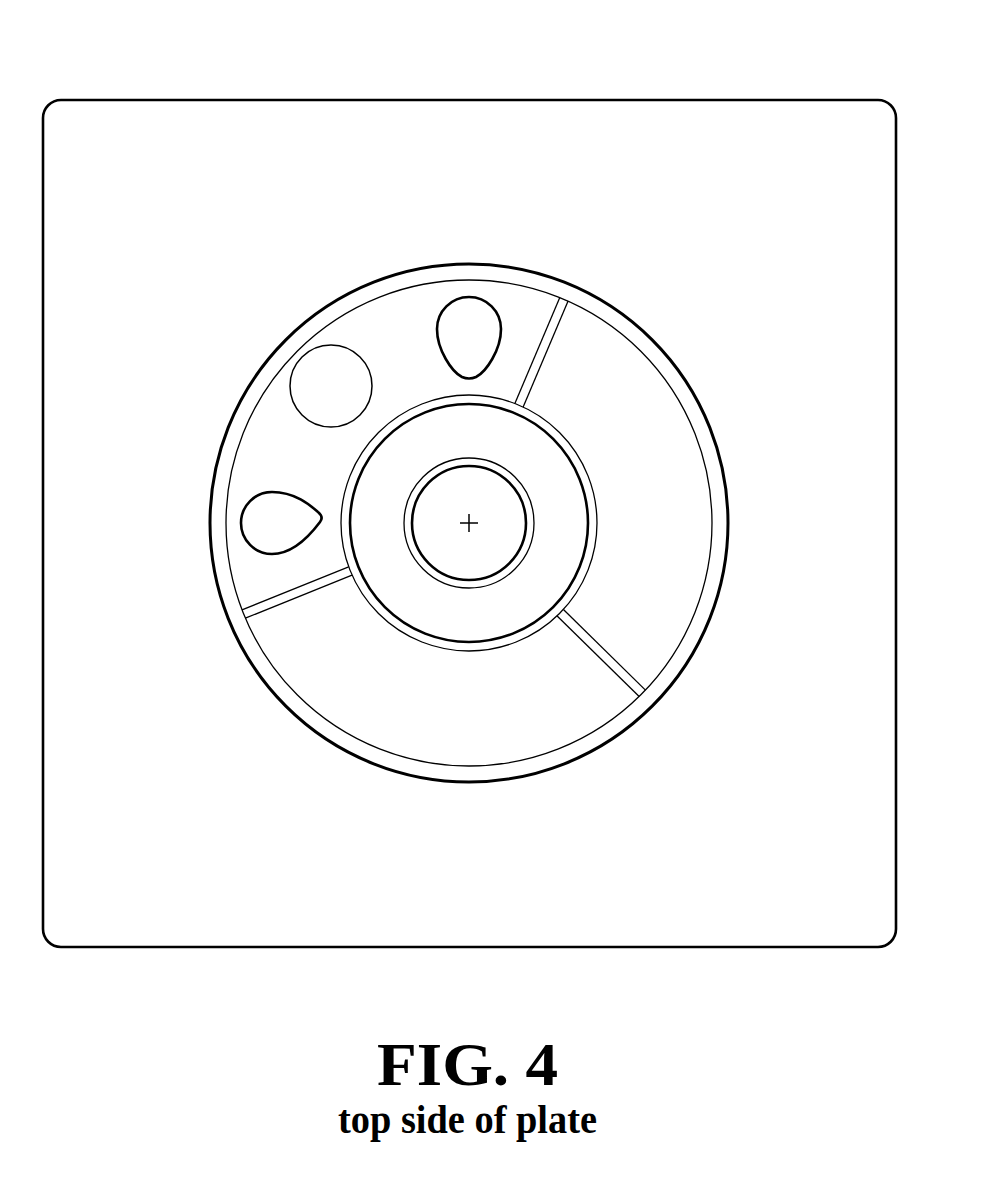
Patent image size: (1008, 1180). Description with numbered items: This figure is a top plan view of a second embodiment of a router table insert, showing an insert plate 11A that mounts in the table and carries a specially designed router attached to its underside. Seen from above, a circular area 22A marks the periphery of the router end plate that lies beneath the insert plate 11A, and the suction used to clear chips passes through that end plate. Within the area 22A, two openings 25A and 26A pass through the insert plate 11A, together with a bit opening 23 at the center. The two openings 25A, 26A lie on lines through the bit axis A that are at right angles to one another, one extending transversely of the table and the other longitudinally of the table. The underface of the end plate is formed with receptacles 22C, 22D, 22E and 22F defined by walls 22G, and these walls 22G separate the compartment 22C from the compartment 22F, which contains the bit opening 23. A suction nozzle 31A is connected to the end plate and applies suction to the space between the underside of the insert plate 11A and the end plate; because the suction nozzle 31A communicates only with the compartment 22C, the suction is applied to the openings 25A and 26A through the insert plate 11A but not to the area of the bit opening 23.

The insert plate 11A is at (275, 122).
The area of the periphery of the end plate 22A is at (722, 524).
The compartment 22C is at (372, 330).
The receptacle 22D is at (583, 363).
The receptacle 22E is at (420, 715).
The compartment 22F is at (468, 618).
The walls 22G is at (288, 700).
The bit opening 23 is at (523, 540).
The opening 25A is at (241, 523).
The opening 26A is at (470, 297).
The suction nozzle 31A is at (307, 362).
The bit axis A is at (470, 523).